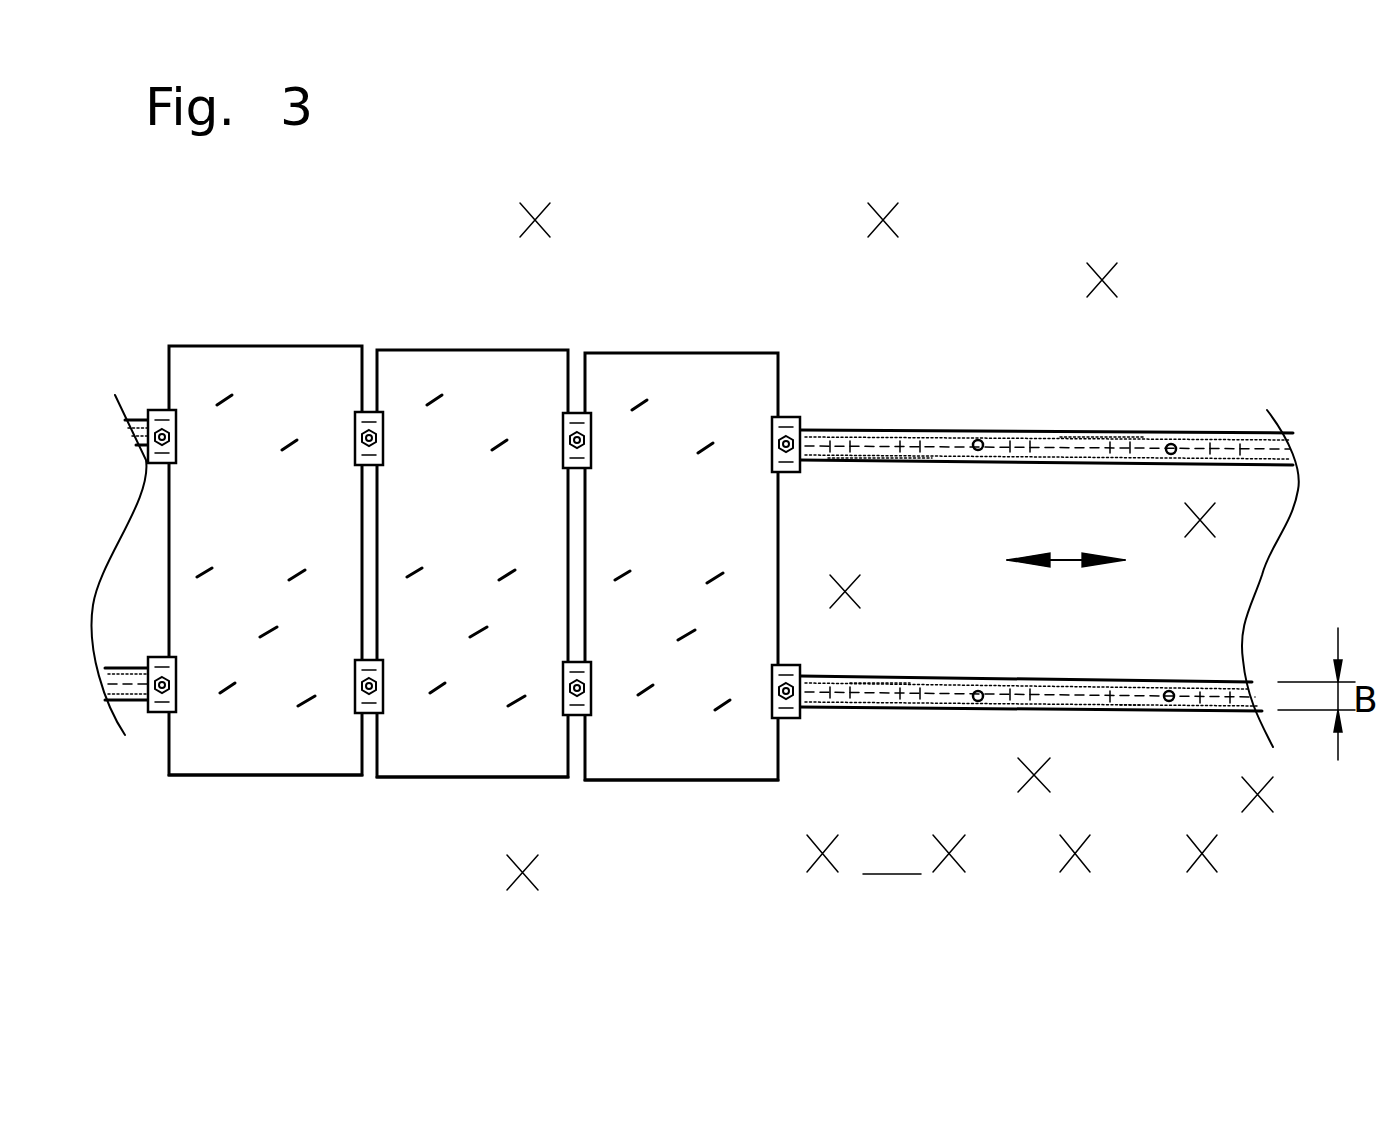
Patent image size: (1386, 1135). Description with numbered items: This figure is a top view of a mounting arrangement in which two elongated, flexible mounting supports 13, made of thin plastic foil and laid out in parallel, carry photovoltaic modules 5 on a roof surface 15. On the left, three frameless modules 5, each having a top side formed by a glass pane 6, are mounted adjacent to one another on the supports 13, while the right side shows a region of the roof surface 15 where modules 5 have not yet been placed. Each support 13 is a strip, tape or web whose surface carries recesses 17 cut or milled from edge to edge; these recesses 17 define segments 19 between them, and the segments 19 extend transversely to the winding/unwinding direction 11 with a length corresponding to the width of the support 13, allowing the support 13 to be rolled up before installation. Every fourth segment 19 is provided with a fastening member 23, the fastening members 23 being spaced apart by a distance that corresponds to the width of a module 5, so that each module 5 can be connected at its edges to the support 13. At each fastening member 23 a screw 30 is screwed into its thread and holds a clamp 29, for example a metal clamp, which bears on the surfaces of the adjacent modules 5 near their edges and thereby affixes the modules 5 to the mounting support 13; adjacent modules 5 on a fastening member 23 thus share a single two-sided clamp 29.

The photovoltaic module 5 is at (318, 347).
The glass pane 6 is at (242, 758).
The winding/unwinding direction 11 is at (1058, 558).
The mounting support 13 is at (958, 430).
The roof surface 15 is at (943, 762).
The recess 17 is at (1142, 433).
The segment 19 is at (928, 457).
The fastening member 23 is at (980, 440).
The clamp 29 is at (355, 464).
The screw 30 is at (372, 430).